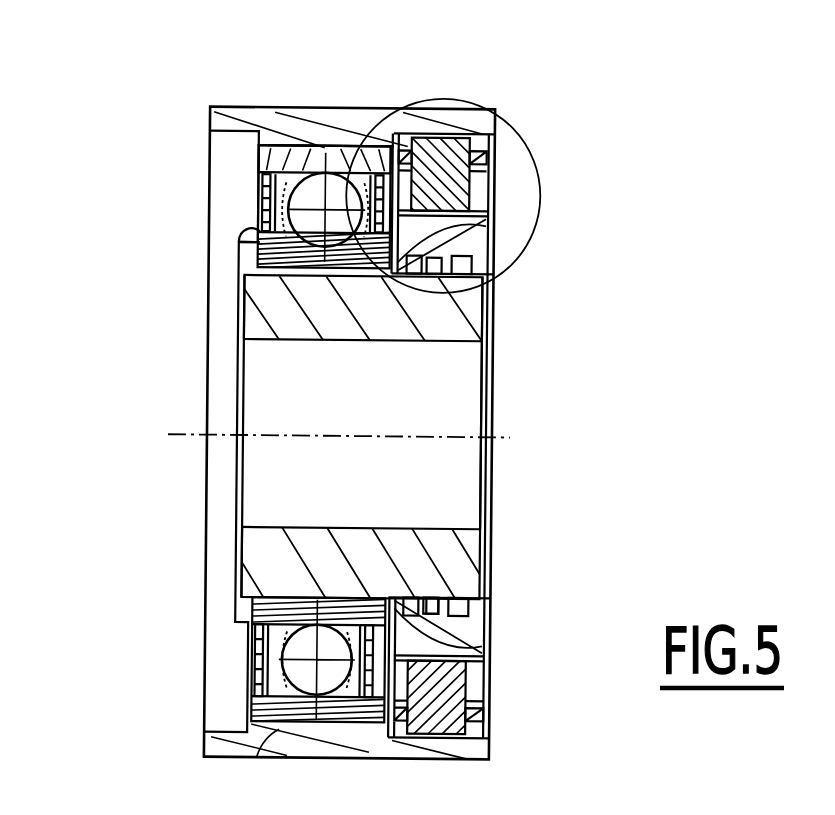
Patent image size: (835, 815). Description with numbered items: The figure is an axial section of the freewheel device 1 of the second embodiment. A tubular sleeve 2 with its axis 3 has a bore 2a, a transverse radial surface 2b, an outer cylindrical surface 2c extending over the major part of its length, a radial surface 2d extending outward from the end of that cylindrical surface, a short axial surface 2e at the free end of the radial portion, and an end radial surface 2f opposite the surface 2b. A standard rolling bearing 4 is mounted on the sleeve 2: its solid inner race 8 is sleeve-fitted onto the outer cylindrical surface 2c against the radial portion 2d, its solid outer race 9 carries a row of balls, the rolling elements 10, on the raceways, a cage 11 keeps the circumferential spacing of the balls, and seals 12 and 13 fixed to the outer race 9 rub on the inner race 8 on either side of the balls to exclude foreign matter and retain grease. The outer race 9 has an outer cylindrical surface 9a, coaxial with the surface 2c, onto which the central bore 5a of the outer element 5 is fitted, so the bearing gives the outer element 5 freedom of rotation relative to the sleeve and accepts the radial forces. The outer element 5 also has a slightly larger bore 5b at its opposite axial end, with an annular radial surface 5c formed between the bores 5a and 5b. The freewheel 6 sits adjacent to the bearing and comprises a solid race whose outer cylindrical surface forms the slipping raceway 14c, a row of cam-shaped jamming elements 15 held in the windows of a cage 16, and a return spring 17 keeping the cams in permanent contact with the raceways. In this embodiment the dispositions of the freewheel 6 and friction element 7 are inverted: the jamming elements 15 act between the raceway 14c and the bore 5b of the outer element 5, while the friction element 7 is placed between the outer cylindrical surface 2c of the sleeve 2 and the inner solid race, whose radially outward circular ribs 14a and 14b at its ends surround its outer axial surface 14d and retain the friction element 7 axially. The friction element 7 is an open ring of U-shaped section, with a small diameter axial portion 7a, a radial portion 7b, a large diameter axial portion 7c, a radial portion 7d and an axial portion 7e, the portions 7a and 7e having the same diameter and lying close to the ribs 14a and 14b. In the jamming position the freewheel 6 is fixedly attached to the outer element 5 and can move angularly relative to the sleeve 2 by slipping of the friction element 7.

The freewheel device 1 is at (178, 200).
The tubular sleeve 2 is at (359, 411).
The bore 2a is at (283, 385).
The transverse radial surface 2b is at (484, 318).
The outer cylindrical surface 2c is at (367, 273).
The radial surface 2d is at (248, 285).
The short axial surface 2e is at (232, 228).
The end radial surface 2f is at (233, 307).
The axis 3 is at (225, 437).
The rolling bearing 4 is at (245, 188).
The outer element 5 is at (228, 107).
The central bore 5a is at (272, 146).
The bore 5b is at (456, 135).
The annular radial surface 5c is at (404, 132).
The freewheel 6 is at (502, 152).
The friction element 7 is at (460, 603).
The axial portion 7a is at (430, 255).
The radial portion 7b is at (415, 255).
The axial portion 7c is at (440, 282).
The radial portion 7d is at (435, 273).
The axial portion 7e is at (445, 257).
The inner race 8 is at (255, 610).
The outer race 9 is at (333, 705).
The outer cylindrical surface 9a is at (268, 757).
The rolling elements 10 is at (300, 720).
The cage 11 is at (254, 640).
The seal 12 is at (258, 676).
The seal 13 is at (365, 710).
The circular rib 14a is at (383, 552).
The circular rib 14b is at (478, 613).
The slipping raceway 14c is at (470, 668).
The outer axial surface 14d is at (435, 595).
The jamming elements 15 is at (415, 742).
The cage 16 is at (487, 714).
The spring 17 is at (487, 688).